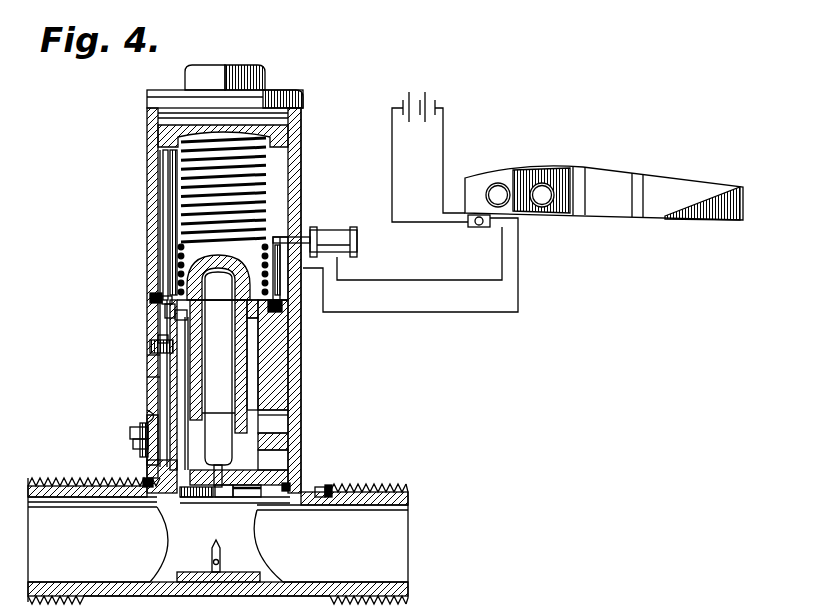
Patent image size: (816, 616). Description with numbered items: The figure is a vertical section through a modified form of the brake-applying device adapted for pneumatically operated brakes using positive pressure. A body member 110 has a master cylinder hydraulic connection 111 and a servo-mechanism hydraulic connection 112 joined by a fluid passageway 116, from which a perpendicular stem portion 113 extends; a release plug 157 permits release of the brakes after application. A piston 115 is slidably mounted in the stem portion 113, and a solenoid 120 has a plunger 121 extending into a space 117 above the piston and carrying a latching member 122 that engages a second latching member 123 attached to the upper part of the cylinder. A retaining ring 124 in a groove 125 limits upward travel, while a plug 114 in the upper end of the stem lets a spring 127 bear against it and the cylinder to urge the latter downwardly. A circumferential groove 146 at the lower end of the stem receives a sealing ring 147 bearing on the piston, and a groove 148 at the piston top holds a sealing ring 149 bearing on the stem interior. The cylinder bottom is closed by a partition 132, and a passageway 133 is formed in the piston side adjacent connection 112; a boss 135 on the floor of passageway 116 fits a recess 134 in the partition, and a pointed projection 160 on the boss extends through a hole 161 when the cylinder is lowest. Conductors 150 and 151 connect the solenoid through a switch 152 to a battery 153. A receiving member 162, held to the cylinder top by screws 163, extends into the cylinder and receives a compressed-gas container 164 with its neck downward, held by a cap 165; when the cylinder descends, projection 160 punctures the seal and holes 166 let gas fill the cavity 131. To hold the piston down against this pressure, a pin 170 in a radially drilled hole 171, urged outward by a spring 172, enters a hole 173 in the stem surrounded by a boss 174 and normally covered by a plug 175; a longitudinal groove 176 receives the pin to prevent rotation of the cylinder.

The body member 110 is at (300, 411).
The master cylinder hydraulic connection 111 is at (53, 588).
The servo-mechanism hydraulic connection 112 is at (390, 488).
The stem portion 113 is at (149, 168).
The plug 114 is at (213, 72).
The piston 115 is at (277, 357).
The fluid passageway 116 is at (112, 536).
The space 117 is at (178, 209).
The solenoid 120 is at (332, 235).
The plunger 121 is at (295, 240).
The latching member 122 is at (281, 268).
The second latching member 123 is at (278, 280).
The retaining ring 124 is at (153, 297).
The groove 125 is at (162, 300).
The spring 127 is at (268, 167).
The cavity 131 is at (183, 387).
The partition 132 is at (203, 487).
The passageway 133 is at (277, 427).
The recess 134 is at (268, 502).
The boss 135 is at (223, 576).
The circumferential groove 146 is at (143, 481).
The sealing ring 147 is at (297, 480).
The groove 148 is at (168, 308).
The sealing ring 149 is at (282, 308).
The conductor 150 is at (399, 280).
The conductor 151 is at (418, 312).
The switch 152 is at (476, 228).
The battery 153 is at (426, 93).
The release plug 157 is at (332, 487).
The pointed projection 160 is at (212, 550).
The hole 161 is at (220, 482).
The receiving member 162 is at (247, 333).
The screws 163 is at (176, 318).
The container 164 is at (220, 382).
The cap 165 is at (180, 250).
The holes 166 is at (218, 552).
The pin 170 is at (152, 344).
The radially drilled hole 171 is at (158, 338).
The spring 172 is at (153, 356).
The hole 173 is at (150, 415).
The boss 174 is at (134, 450).
The plug 175 is at (130, 435).
The longitudinal groove 176 is at (150, 377).